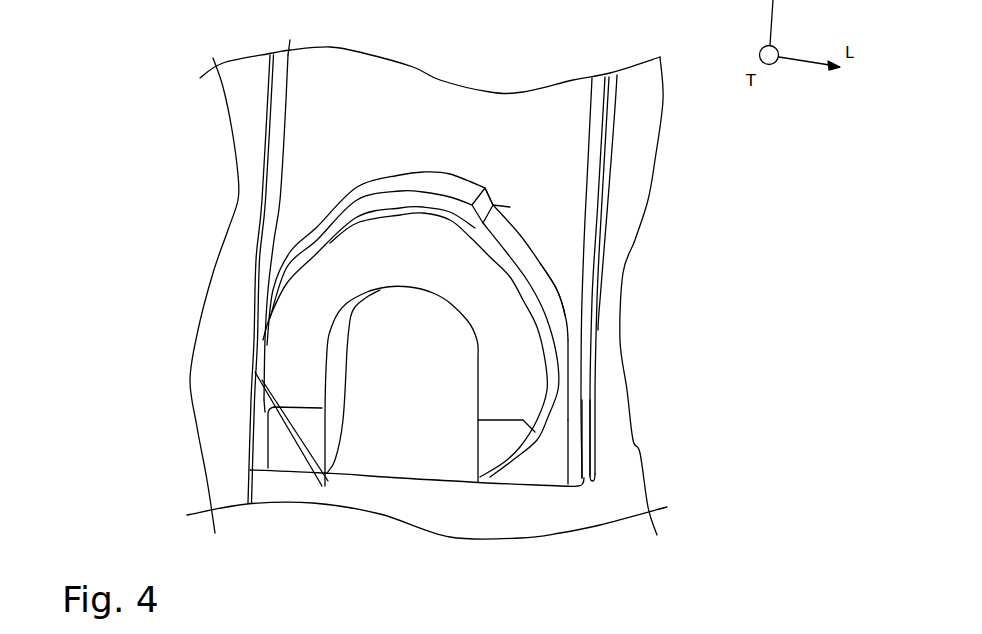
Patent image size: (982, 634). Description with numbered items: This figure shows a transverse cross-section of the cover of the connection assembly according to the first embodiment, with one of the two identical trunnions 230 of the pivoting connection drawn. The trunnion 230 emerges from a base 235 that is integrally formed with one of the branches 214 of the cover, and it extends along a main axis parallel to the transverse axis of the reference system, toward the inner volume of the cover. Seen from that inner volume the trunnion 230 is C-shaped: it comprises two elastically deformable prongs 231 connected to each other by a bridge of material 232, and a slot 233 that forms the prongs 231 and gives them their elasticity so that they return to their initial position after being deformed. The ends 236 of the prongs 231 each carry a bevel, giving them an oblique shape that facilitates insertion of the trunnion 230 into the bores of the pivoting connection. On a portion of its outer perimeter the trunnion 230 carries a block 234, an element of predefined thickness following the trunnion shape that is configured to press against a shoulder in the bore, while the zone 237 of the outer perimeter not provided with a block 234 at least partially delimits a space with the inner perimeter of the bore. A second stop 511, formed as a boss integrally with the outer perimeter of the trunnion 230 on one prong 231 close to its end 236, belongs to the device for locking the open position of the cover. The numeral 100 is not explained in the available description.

The vehicle body 100 is at (427, 269).
The branch 214 is at (645, 117).
The trunnion 230 is at (243, 302).
The deformable prong 231 is at (268, 364).
The bridge of material 232 is at (410, 250).
The slot 233 is at (408, 450).
The block 234 is at (378, 188).
The base 235 is at (275, 132).
The end of prong 236 is at (297, 435).
The zone of the outer perimeter not provided with a block 237 is at (558, 313).
The second stop 511 is at (548, 417).